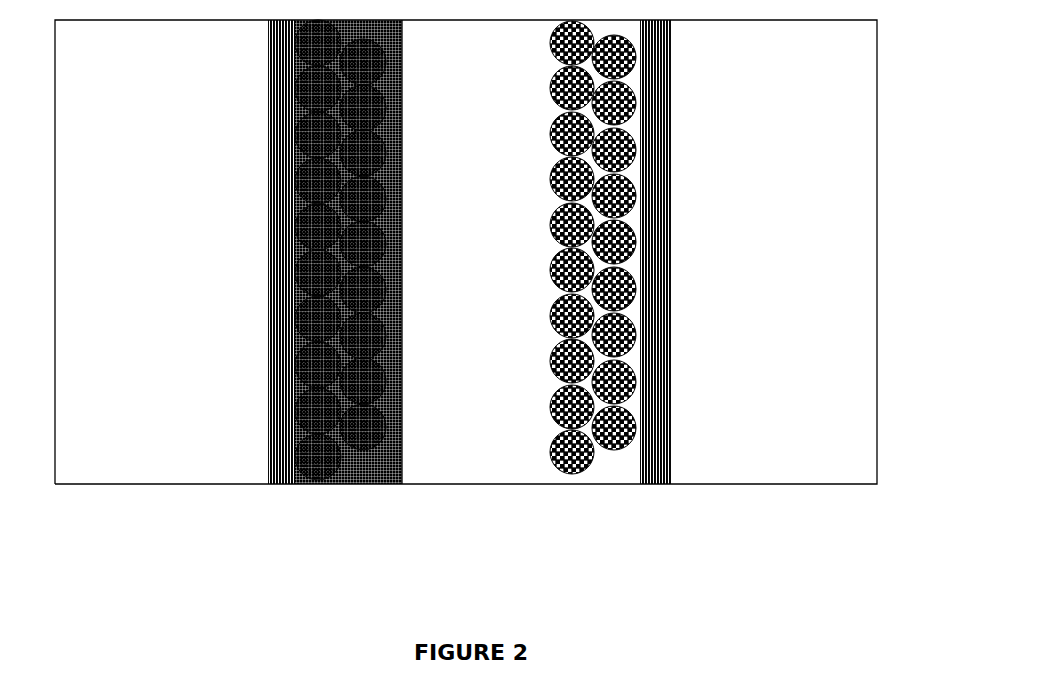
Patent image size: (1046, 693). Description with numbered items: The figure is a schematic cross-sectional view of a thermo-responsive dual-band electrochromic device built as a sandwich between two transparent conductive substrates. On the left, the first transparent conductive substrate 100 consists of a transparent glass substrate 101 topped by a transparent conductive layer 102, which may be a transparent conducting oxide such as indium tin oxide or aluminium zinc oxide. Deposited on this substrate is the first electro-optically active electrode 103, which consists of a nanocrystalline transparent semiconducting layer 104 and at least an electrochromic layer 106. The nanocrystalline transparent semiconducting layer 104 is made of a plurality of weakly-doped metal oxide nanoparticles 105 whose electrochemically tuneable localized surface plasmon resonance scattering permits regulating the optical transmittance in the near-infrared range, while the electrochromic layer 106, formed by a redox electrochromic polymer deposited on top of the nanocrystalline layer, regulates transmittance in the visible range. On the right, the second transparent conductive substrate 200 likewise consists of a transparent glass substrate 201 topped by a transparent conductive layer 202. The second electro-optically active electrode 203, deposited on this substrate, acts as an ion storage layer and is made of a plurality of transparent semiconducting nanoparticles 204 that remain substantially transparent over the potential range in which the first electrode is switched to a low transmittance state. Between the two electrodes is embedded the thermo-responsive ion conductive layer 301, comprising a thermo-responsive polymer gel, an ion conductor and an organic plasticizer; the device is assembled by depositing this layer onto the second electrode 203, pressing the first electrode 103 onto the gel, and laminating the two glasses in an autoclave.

The first transparent conductive substrate 100 is at (268, 485).
The transparent glass substrate 101 is at (177, 410).
The transparent conductive layer 102 is at (278, 485).
The first electro-optically active electrode 103 is at (337, 485).
The nanocrystalline transparent semiconducting layer 104 is at (350, 485).
The weakly-doped metal oxide nanoparticles 105 is at (382, 485).
The electrochromic layer 106 is at (402, 440).
The second transparent conductive substrate 200 is at (672, 485).
The transparent glass substrate 201 is at (777, 408).
The transparent conductive layer 202 is at (662, 485).
The second electro-optically active electrode 203 is at (575, 477).
The transparent semiconducting nanoparticles 204 is at (618, 450).
The thermo-responsive ion conductive layer 301 is at (512, 430).